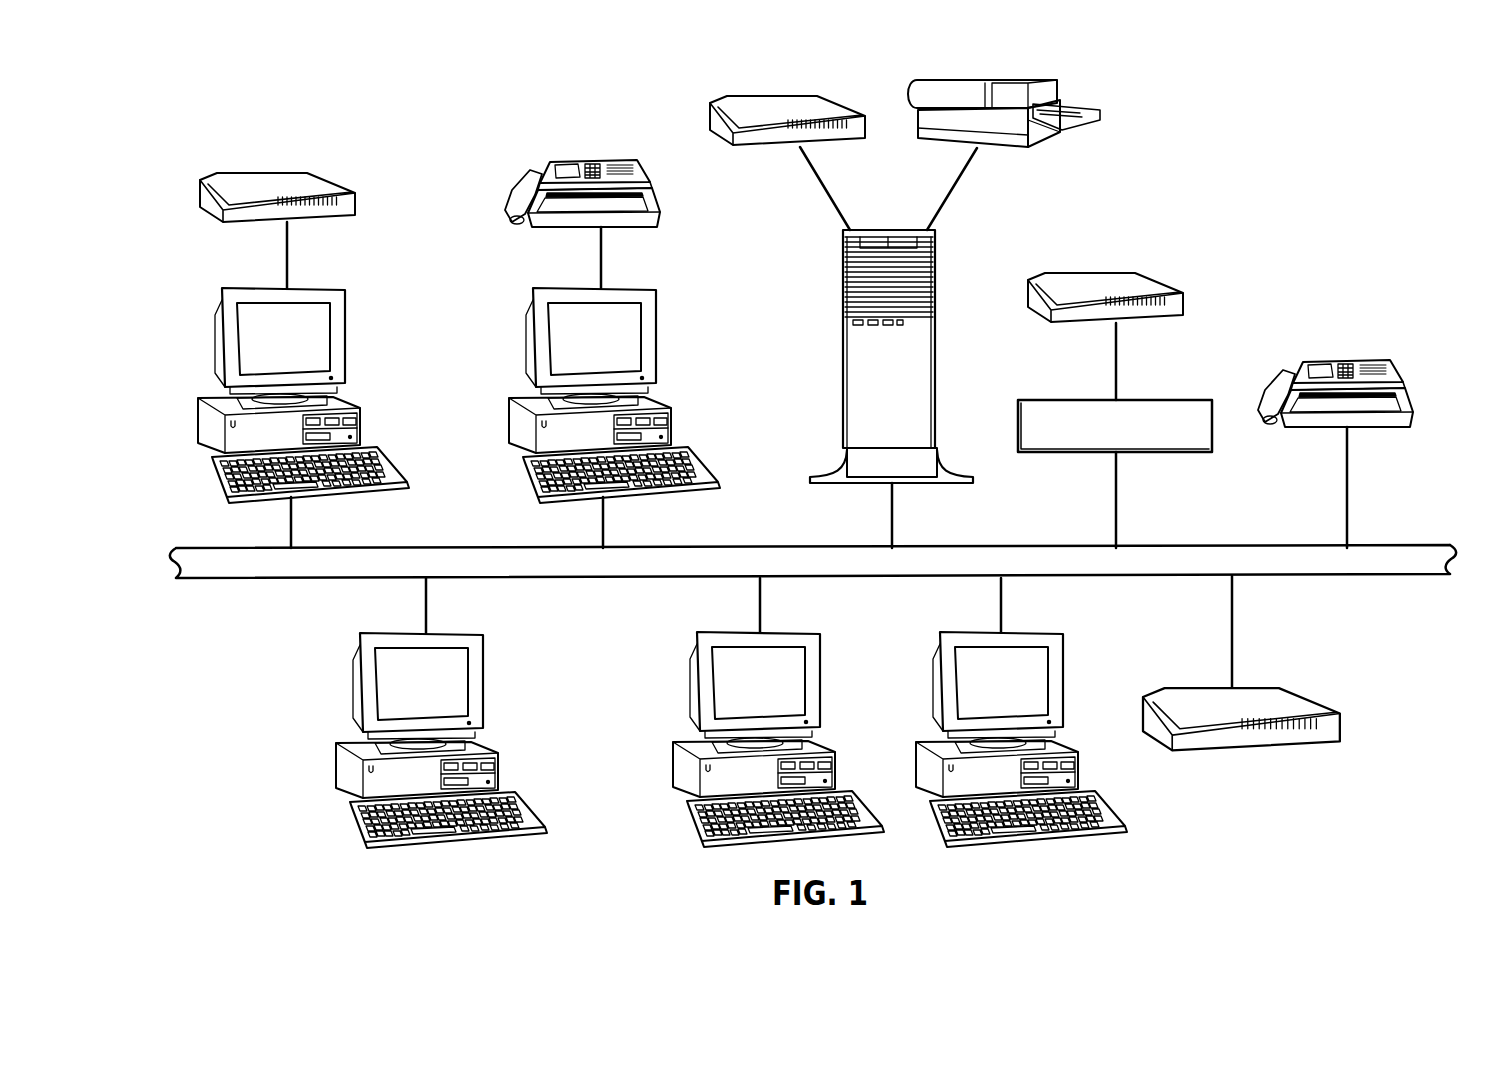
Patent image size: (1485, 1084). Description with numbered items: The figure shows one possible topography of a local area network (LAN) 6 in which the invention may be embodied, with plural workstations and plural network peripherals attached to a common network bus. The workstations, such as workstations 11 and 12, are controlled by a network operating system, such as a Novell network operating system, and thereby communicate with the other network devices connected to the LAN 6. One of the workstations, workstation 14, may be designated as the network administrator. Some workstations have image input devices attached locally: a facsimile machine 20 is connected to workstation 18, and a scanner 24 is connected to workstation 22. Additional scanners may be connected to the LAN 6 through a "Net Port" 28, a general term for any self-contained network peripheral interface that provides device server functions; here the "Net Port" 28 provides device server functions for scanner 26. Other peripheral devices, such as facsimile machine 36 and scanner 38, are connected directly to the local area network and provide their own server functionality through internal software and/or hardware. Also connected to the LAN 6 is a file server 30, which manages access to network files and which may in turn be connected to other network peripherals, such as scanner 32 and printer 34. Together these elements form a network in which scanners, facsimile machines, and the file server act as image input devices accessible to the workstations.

The local area network 6 is at (242, 580).
The workstation 11 is at (867, 803).
The workstation 12 is at (1110, 802).
The workstation 14 is at (532, 807).
The workstation 18 is at (699, 452).
The facsimile machine 20 is at (535, 172).
The workstation 22 is at (386, 453).
The scanner 24 is at (308, 173).
The scanner 26 is at (1133, 272).
The Net Port 28 is at (1148, 400).
The file server 30 is at (843, 362).
The scanner 32 is at (763, 93).
The printer 34 is at (1050, 80).
The facsimile machine 36 is at (1303, 362).
The scanner 38 is at (1297, 688).